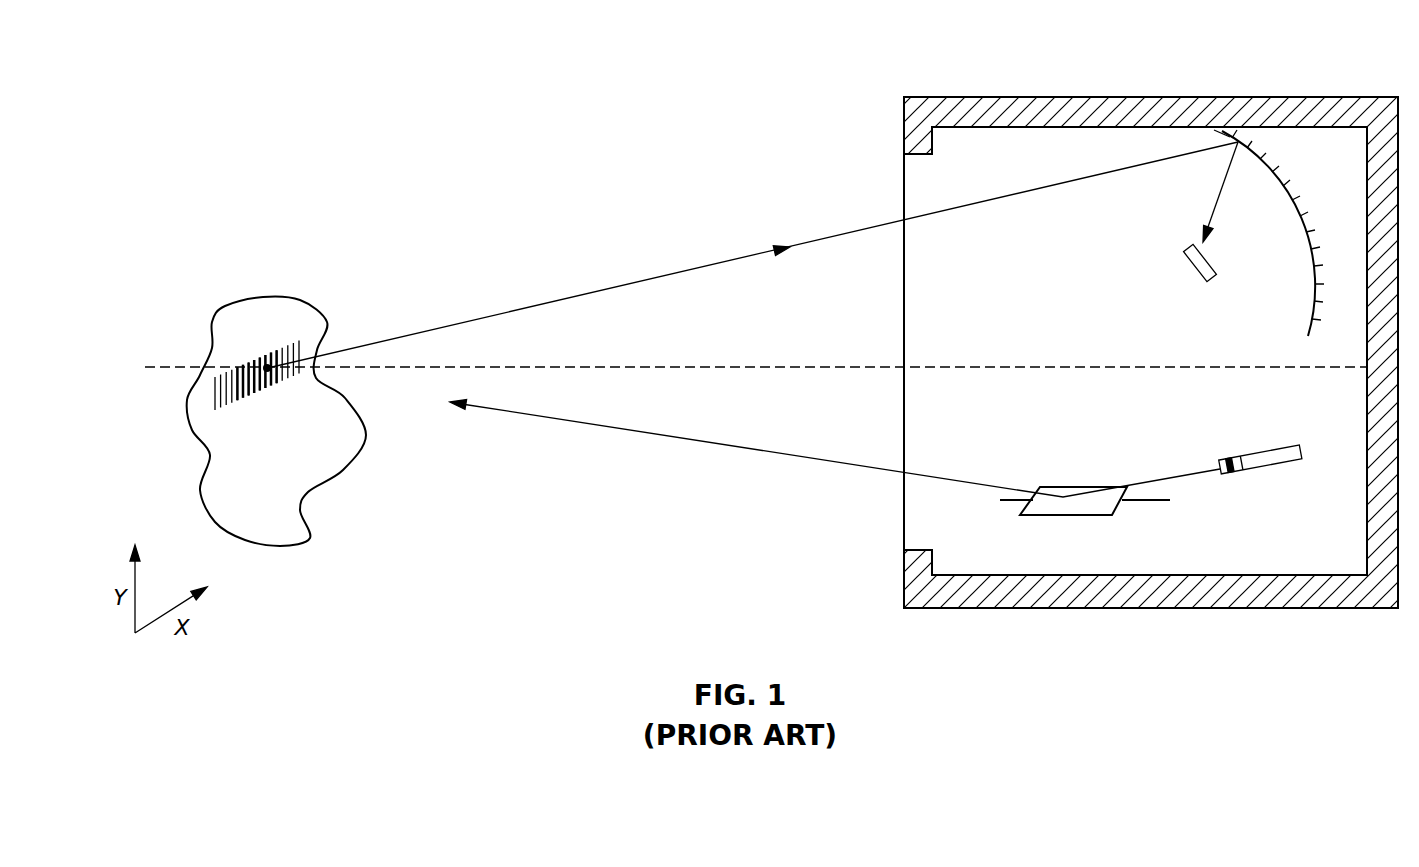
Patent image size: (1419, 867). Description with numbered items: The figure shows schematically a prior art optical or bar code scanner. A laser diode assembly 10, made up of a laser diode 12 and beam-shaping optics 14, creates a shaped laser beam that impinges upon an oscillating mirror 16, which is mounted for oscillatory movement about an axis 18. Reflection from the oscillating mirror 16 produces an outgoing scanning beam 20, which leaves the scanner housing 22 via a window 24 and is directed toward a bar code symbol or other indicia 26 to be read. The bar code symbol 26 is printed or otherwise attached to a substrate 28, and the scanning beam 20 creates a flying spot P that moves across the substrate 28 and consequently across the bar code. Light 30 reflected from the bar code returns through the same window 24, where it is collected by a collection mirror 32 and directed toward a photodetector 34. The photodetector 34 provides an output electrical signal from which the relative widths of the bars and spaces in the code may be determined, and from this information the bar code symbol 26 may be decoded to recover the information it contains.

The laser diode assembly 10 is at (1262, 425).
The laser diode 12 is at (1290, 465).
The beam-shaping optics 14 is at (1233, 470).
The oscillating mirror 16 is at (1078, 515).
The axis 18 is at (1147, 500).
The outgoing scanning beam 20 is at (660, 433).
The scanner housing 22 is at (1017, 97).
The window 24 is at (902, 518).
The bar code symbol 26 is at (217, 388).
The substrate 28 is at (342, 470).
The reflected light 30 is at (595, 293).
The collection mirror 32 is at (1308, 272).
The photodetector 34 is at (1187, 264).